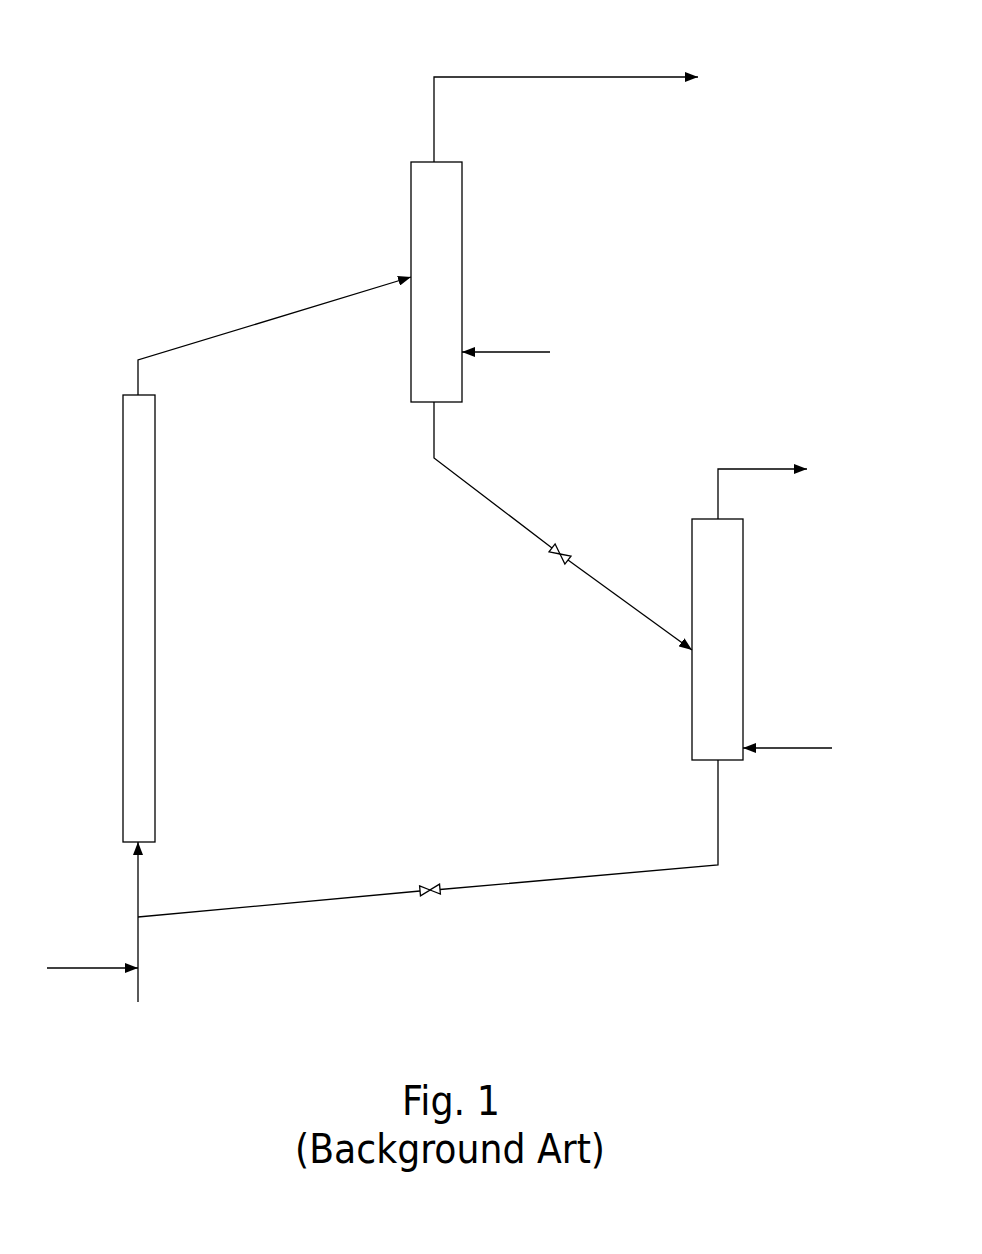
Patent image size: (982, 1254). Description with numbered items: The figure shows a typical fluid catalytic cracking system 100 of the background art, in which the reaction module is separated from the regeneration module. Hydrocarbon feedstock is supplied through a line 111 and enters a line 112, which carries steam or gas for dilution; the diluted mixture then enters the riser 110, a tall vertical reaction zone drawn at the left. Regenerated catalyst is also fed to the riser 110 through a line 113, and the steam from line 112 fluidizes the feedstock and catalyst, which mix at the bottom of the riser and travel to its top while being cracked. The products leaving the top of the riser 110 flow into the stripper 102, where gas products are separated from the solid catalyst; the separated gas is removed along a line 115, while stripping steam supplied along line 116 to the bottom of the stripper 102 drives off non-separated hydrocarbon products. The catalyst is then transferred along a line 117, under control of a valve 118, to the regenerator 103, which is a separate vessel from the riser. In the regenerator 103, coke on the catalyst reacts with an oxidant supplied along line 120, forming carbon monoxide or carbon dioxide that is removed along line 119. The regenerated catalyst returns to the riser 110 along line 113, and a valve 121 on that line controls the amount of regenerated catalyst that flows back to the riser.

The FCC system 100 is at (255, 60).
The stripper 102 is at (373, 279).
The regenerator 103 is at (781, 639).
The riser 110 is at (206, 559).
The line 111 is at (92, 946).
The line 112 is at (171, 935).
The line 113 is at (428, 859).
The line 115 is at (566, 103).
The line 116 is at (506, 334).
The line 117 is at (554, 526).
The valve 118 is at (617, 524).
The line 119 is at (762, 475).
The line 120 is at (787, 733).
The valve 121 is at (494, 929).